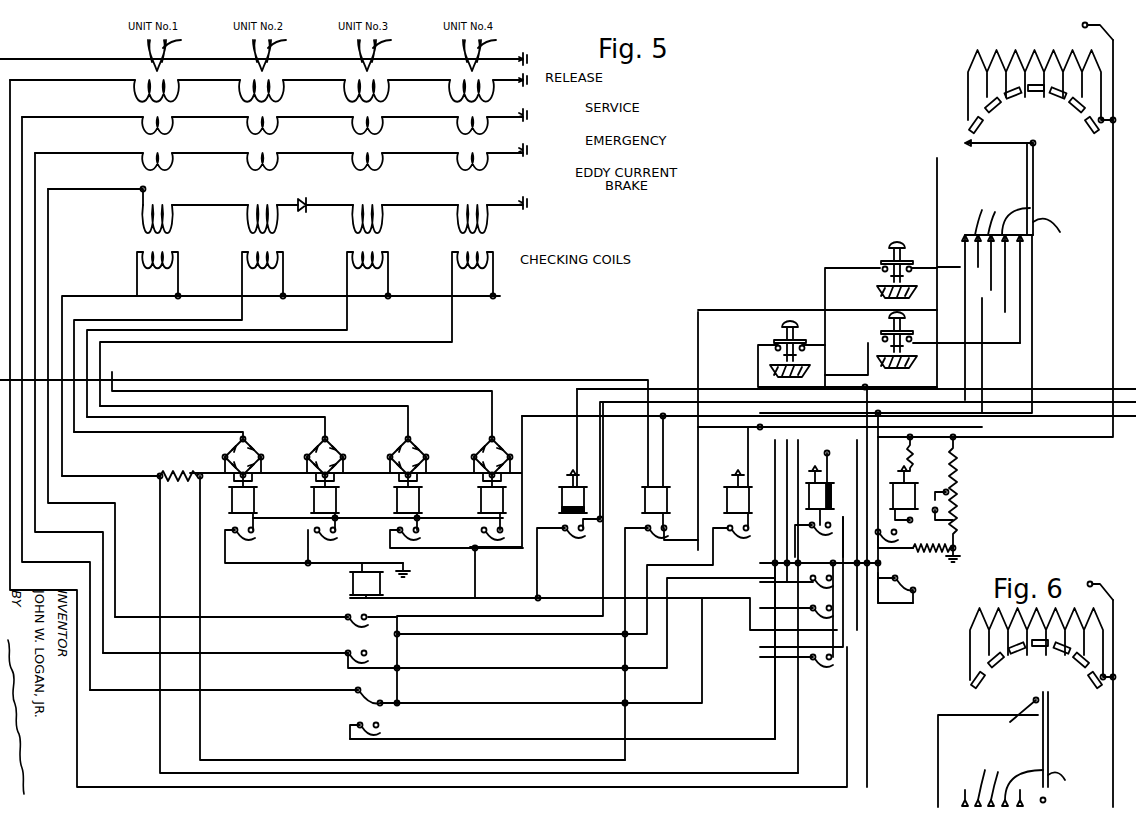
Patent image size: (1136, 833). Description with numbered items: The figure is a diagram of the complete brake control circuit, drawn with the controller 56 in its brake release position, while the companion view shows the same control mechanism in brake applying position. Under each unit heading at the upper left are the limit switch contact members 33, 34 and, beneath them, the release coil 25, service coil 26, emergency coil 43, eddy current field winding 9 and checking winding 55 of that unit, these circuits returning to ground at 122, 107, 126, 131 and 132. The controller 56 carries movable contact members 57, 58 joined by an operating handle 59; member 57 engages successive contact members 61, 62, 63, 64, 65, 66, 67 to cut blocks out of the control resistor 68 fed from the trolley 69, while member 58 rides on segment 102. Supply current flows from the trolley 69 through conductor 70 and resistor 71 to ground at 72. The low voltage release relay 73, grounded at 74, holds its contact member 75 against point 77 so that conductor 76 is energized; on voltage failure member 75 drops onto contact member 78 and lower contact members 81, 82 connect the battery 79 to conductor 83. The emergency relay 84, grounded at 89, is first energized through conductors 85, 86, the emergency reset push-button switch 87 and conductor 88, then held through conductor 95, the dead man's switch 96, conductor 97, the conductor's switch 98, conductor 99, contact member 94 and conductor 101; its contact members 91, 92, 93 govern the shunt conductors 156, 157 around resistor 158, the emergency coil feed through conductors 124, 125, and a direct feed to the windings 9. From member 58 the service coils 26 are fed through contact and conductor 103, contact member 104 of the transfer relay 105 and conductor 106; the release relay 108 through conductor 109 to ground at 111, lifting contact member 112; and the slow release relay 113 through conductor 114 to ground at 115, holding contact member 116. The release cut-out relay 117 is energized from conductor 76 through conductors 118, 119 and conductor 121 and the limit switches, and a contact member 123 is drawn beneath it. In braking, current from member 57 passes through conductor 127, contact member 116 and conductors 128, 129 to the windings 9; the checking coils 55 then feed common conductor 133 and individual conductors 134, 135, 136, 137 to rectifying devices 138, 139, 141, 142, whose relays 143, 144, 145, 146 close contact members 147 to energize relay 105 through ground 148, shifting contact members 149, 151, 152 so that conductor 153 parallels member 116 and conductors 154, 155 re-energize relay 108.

In FIG. 5, the limit switch contact member 33 is at (147, 50).
In FIG. 5, the limit switch contact member 34 is at (336, 40).
In FIG. 5, the release coil 25 is at (491, 72).
In FIG. 5, the service coil 26 is at (495, 109).
In FIG. 5, the emergency coil 43 is at (495, 145).
In FIG. 5, the eddy current field winding 9 is at (482, 191).
In FIG. 5, the eddy current checking winding 55 is at (501, 245).
In FIG. 5, the ground 122 is at (527, 57).
In FIG. 5, the ground 107 is at (527, 113).
In FIG. 5, the ground 126 is at (527, 149).
In FIG. 5, the ground 132 is at (527, 203).
In FIG. 5, the ground 131 is at (308, 208).
In FIG. 5, the common conductor 133 is at (100, 455).
In FIG. 5, the individual conductor 134 is at (140, 302).
In FIG. 5, the individual conductor 135 is at (246, 310).
In FIG. 5, the individual conductor 136 is at (350, 318).
In FIG. 5, the individual conductor 137 is at (455, 325).
In FIG. 5, the conductor 121 is at (600, 378).
In FIG. 5, the rectifying device 138 is at (250, 445).
In FIG. 5, the rectifying device 139 is at (332, 445).
In FIG. 5, the rectifying device 141 is at (415, 445).
In FIG. 5, the rectifying device 142 is at (496, 445).
In FIG. 5, the rectifier operated relay 143 is at (232, 500).
In FIG. 5, the rectifier operated relay 144 is at (314, 500).
In FIG. 5, the rectifier operated relay 145 is at (397, 500).
In FIG. 5, the rectifier operated relay 146 is at (481, 500).
In FIG. 5, the contact member 147 is at (490, 560).
In FIG. 5, the ground 148 is at (410, 572).
In FIG. 5, the resistor 158 is at (176, 470).
In FIG. 5, the conductor 156 is at (865, 757).
In FIG. 5, the conductor 157 is at (783, 757).
In FIG. 5, the transfer relay 105 is at (352, 585).
In FIG. 5, the conductor 129 is at (290, 620).
In FIG. 5, the contact member 149 is at (350, 616).
In FIG. 5, the conductor 153 is at (482, 616).
In FIG. 5, the conductor 154 is at (756, 556).
In FIG. 5, the conductor 125 is at (290, 655).
In FIG. 5, the contact member 151 is at (364, 648).
In FIG. 5, the conductor 124 is at (482, 668).
In FIG. 5, the conductor 106 is at (290, 692).
In FIG. 5, the contact member 104 is at (355, 695).
In FIG. 5, the contact member and conductor 103 is at (995, 672).
In FIG. 6, the contact member and conductor 103 is at (995, 772).
In FIG. 5, the contact member 152 is at (358, 725).
In FIG. 5, the conductor 155 is at (470, 740).
In FIG. 5, the conductor 128 is at (482, 596).
In FIG. 5, the conductor 118 is at (724, 432).
In FIG. 5, the ground 115 is at (568, 480).
In FIG. 5, the slow release relay 113 is at (562, 505).
In FIG. 5, the movable contact member 116 is at (580, 545).
In FIG. 5, the conductor 127 is at (935, 182).
In FIG. 6, the conductor 127 is at (935, 728).
In FIG. 5, the conductor 119 is at (675, 440).
In FIG. 5, the release cut-out relay 117 is at (685, 487).
In FIG. 5, the relay contacts 123 is at (660, 545).
In FIG. 5, the ground 111 is at (732, 472).
In FIG. 5, the release relay 108 is at (726, 500).
In FIG. 5, the relay contact member 112 is at (748, 548).
In FIG. 5, the conductor 109 is at (962, 230).
In FIG. 6, the conductor 109 is at (975, 780).
In FIG. 5, the conductor 70 is at (1113, 315).
In FIG. 6, the conductor 70 is at (1113, 735).
In FIG. 5, the dead man's push-button switch 96 is at (892, 248).
In FIG. 5, the conductor 97 is at (856, 268).
In FIG. 5, the conductor 95 is at (933, 268).
In FIG. 5, the conductor's switch 98 is at (782, 325).
In FIG. 5, the conductor 99 is at (756, 352).
In FIG. 5, the conductor 114 is at (960, 798).
In FIG. 6, the conductor 114 is at (957, 800).
In FIG. 5, the emergency reset push-button switch 87 is at (885, 340).
In FIG. 5, the conductor 88 is at (855, 385).
In FIG. 5, the conductor 86 is at (1018, 343).
In FIG. 5, the conductor 85 is at (1048, 800).
In FIG. 6, the conductor 85 is at (1046, 803).
In FIG. 5, the movable contact member 57 is at (962, 145).
In FIG. 6, the movable contact member 57 is at (1058, 712).
In FIG. 5, the controller 56 is at (1036, 187).
In FIG. 6, the controller 56 is at (1050, 745).
In FIG. 5, the operating handle 59 is at (1040, 200).
In FIG. 6, the operating handle 59 is at (1050, 760).
In FIG. 5, the movable contact member 58 is at (1075, 762).
In FIG. 6, the movable contact member 58 is at (1048, 780).
In FIG. 5, the segment 102 is at (1075, 776).
In FIG. 6, the segment 102 is at (1062, 776).
In FIG. 5, the control resistor 68 is at (1035, 60).
In FIG. 6, the control resistor 68 is at (1022, 622).
In FIG. 5, the trolley 69 is at (1082, 25).
In FIG. 6, the trolley 69 is at (1088, 585).
In FIG. 5, the contact member 61 is at (985, 135).
In FIG. 6, the contact member 61 is at (984, 690).
In FIG. 5, the contact member 62 is at (1000, 112).
In FIG. 6, the contact member 62 is at (1002, 668).
In FIG. 5, the contact member 63 is at (1018, 100).
In FIG. 6, the contact member 63 is at (1020, 655).
In FIG. 5, the contact member 64 is at (1038, 95).
In FIG. 6, the contact member 64 is at (1040, 650).
In FIG. 5, the contact member 65 is at (1060, 100).
In FIG. 6, the contact member 65 is at (1060, 655).
In FIG. 5, the contact member 66 is at (1075, 112).
In FIG. 6, the contact member 66 is at (1078, 668).
In FIG. 5, the contact member 67 is at (1090, 133).
In FIG. 6, the contact member 67 is at (1093, 688).
In FIG. 5, the ground 89 is at (800, 478).
In FIG. 5, the emergency relay 84 is at (835, 485).
In FIG. 5, the contact member 91 is at (832, 532).
In FIG. 5, the contact member 92 is at (828, 580).
In FIG. 5, the contact member 93 is at (828, 610).
In FIG. 5, the lower relay contact member 94 is at (828, 660).
In FIG. 5, the conductor 101 is at (857, 633).
In FIG. 5, the ground 74 is at (890, 478).
In FIG. 5, the low voltage release relay 73 is at (916, 498).
In FIG. 5, the resistor 71 is at (958, 470).
In FIG. 5, the conductor 76 is at (898, 518).
In FIG. 5, the point 77 is at (945, 504).
In FIG. 5, the contact member 78 is at (933, 522).
In FIG. 5, the armature or contact member 75 is at (895, 542).
In FIG. 5, the ground 72 is at (960, 552).
In FIG. 5, the battery 79 is at (946, 553).
In FIG. 5, the lower contact member 81 is at (896, 582).
In FIG. 5, the lower contact member 82 is at (916, 595).
In FIG. 5, the conductor 83 is at (888, 605).